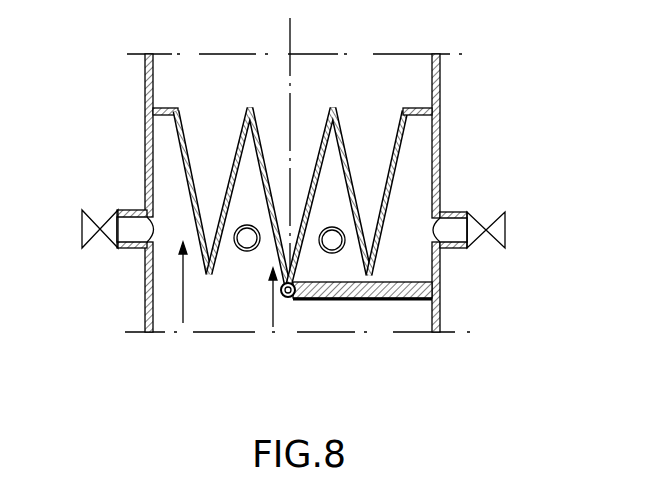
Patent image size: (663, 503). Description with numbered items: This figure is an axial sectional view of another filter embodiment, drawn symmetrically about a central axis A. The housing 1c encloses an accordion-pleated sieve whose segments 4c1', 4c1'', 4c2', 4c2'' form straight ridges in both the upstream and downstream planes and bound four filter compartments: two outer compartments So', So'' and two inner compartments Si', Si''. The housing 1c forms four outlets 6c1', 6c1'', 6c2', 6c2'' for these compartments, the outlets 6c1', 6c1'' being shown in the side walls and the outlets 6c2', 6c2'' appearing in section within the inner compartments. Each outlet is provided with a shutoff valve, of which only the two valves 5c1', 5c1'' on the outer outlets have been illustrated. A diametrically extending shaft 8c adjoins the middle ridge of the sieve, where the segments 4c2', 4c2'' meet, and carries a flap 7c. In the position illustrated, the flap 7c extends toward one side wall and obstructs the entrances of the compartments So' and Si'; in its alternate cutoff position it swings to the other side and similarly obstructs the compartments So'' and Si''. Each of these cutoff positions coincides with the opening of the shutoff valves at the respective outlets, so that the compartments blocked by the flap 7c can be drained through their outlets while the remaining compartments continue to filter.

The axis of symmetry A is at (290, 32).
The housing 1c is at (145, 162).
The sieve segment 4c1' is at (400, 191).
The sieve segment 4c1'' is at (181, 191).
The sieve segment 4c2' is at (328, 198).
The sieve segment 4c2'' is at (248, 219).
The shutoff valve 5c1' is at (492, 198).
The shutoff valve 5c1'' is at (95, 201).
The outlet 6c1' is at (458, 271).
The outlet 6c1'' is at (113, 270).
The outlet 6c2' is at (334, 220).
The outlet 6c2'' is at (251, 219).
The flap 7c is at (387, 301).
The shaft 8c is at (291, 298).
The outer compartment So' is at (406, 103).
The outer compartment So'' is at (177, 103).
The inner compartment Si' is at (314, 99).
The inner compartment Si'' is at (261, 99).